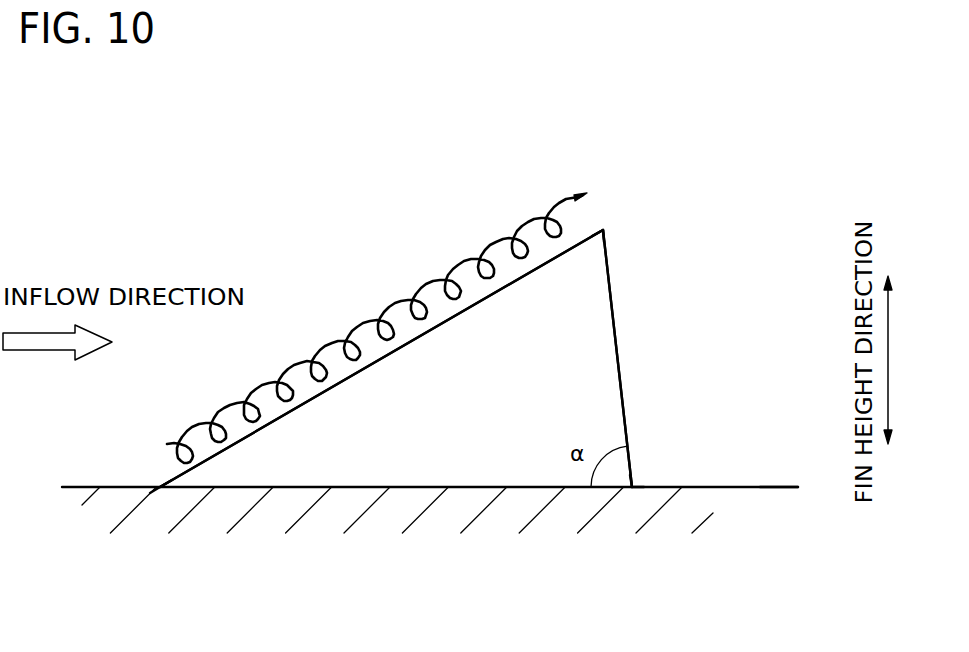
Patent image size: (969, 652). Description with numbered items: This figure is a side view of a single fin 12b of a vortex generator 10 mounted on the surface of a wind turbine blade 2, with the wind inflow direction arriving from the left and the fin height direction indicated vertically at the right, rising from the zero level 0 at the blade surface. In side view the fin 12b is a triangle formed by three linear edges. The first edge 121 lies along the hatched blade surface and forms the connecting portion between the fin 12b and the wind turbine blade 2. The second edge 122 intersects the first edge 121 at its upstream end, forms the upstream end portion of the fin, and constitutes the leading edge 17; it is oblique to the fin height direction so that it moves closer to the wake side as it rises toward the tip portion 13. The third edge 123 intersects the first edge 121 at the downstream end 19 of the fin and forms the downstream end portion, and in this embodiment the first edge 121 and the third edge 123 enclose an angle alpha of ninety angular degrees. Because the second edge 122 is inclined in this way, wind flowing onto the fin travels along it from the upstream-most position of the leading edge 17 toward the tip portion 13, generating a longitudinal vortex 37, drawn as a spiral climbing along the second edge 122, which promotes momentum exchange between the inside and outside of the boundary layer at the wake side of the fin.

The heat exchanger fin structure 10 is at (255, 246).
The wind turbine blade 2 is at (96, 487).
The leading edge 17 is at (160, 487).
The second edge 122 is at (372, 362).
The longitudinal vortex 37 is at (457, 260).
The tip portion 13 is at (605, 228).
The third edge 123 is at (611, 289).
The rear base corner 19 is at (636, 487).
The first edge 121 is at (420, 488).
The cut-and-raised portion 12b is at (572, 488).
The fin height zero reference 0 is at (792, 488).